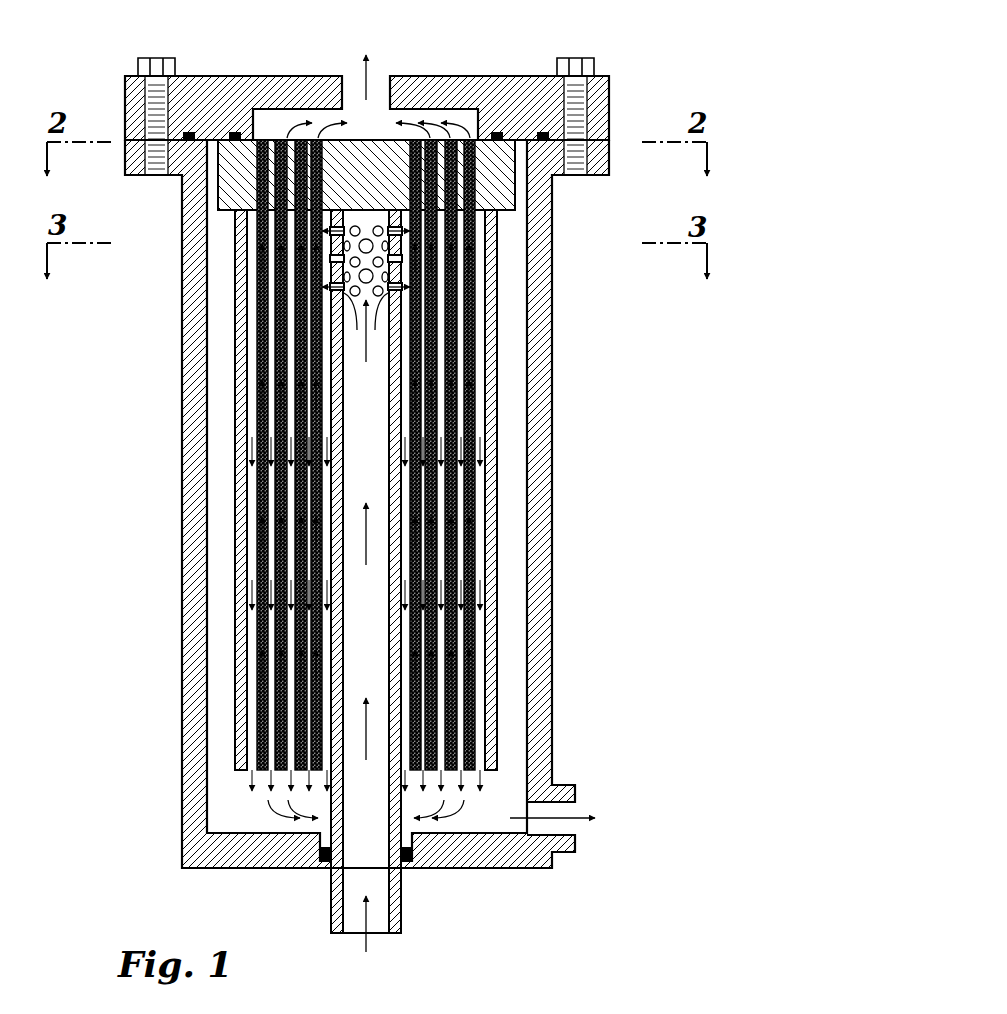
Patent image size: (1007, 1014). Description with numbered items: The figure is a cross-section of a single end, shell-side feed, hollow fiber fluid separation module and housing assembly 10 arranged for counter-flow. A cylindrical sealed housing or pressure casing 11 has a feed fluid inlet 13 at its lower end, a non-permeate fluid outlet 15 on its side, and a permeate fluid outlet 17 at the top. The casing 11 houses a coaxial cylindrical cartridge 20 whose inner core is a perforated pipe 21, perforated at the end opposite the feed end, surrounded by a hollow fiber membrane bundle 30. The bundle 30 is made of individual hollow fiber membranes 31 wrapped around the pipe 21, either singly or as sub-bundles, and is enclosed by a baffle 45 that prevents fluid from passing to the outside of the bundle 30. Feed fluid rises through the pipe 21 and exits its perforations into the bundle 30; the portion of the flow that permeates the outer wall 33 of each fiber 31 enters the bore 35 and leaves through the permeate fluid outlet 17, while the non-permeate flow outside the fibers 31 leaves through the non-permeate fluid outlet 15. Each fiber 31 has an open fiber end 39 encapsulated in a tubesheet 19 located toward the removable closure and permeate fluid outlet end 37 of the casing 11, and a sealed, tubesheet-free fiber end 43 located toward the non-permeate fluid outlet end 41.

The single end separation module and housing assembly 10 is at (429, 500).
The housing/pressure casing 11 is at (551, 403).
The feed fluid inlet 13 is at (350, 934).
The non-permeate fluid outlet 15 is at (578, 828).
The permeate fluid outlet 17 is at (375, 76).
The tubesheet 19 is at (518, 202).
The cartridge 20 is at (228, 468).
The perforated pipe 21 is at (332, 883).
The hollow fiber membrane bundle 30 is at (369, 465).
The individual hollow fiber membrane 31 is at (450, 497).
The outer wall of hollow fiber membrane 33 is at (284, 291).
The bore of hollow fiber membrane 35 is at (284, 227).
The removable closure and permeate fluid outlet end 37 is at (510, 76).
The open fiber end 39 is at (283, 140).
The non-permeate fluid outlet end 41 is at (480, 870).
The sealed fiber end 43 is at (262, 772).
The baffle 45 is at (498, 575).